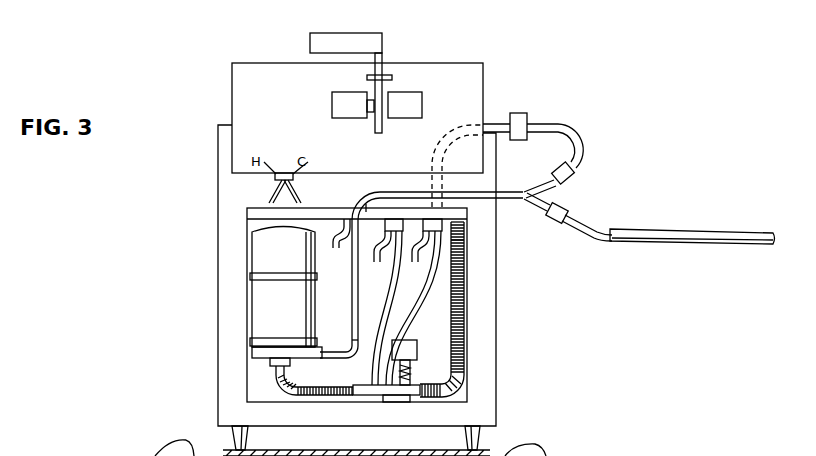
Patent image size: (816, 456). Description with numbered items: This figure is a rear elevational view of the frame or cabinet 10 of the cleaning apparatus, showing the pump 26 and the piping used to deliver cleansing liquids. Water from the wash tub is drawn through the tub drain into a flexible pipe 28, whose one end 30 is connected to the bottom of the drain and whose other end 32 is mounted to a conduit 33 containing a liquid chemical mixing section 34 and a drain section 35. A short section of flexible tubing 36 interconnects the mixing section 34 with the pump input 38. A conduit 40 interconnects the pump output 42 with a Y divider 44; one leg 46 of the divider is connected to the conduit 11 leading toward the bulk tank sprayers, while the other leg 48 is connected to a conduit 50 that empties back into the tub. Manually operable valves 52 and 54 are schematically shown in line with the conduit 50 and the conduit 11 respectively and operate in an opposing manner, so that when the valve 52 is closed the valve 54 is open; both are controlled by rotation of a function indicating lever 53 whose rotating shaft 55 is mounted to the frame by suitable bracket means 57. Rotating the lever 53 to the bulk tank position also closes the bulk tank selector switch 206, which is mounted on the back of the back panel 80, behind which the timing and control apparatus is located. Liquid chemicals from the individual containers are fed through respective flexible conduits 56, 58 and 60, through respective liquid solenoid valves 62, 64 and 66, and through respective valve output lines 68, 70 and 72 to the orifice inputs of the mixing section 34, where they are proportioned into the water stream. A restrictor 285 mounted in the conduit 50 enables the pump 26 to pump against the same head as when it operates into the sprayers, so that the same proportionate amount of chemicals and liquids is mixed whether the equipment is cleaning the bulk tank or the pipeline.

The frame 10 is at (218, 193).
The conduit 11 is at (688, 228).
The pump 26 is at (258, 263).
The flexible pipe 28 is at (466, 326).
The end of flexible pipe 30 is at (466, 232).
The end of flexible pipe 32 is at (422, 372).
The conduit 33 is at (388, 402).
The liquid chemical mixing section 34 is at (358, 396).
The drain section 35 is at (408, 386).
The flexible tubing 36 is at (280, 386).
The pump input 38 is at (268, 370).
The conduit 40 is at (384, 190).
The pump output 42 is at (352, 340).
The Y divider 44 is at (525, 190).
The leg of Y divider 46 is at (562, 204).
The leg of Y divider 48 is at (563, 166).
The conduit 50 is at (545, 124).
The manually operable valve 52 is at (578, 174).
The function indicating lever 53 is at (322, 32).
The manually operable valve 54 is at (563, 224).
The rotating shaft 55 is at (375, 124).
The flexible conduit 56 is at (420, 270).
The bracket means 57 is at (392, 77).
The flexible conduit 58 is at (380, 262).
The flexible conduit 60 is at (337, 243).
The liquid solenoid valve 62 is at (464, 242).
The liquid solenoid valve 64 is at (397, 222).
The liquid solenoid valve 66 is at (358, 208).
The valve output line 68 is at (400, 336).
The valve output line 70 is at (377, 320).
The valve output line 72 is at (346, 362).
The back panel 80 is at (240, 88).
The bulk tank selector switch 206 is at (332, 102).
The restrictor 285 is at (520, 113).